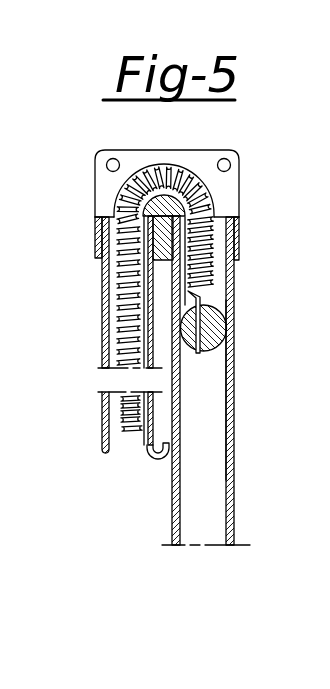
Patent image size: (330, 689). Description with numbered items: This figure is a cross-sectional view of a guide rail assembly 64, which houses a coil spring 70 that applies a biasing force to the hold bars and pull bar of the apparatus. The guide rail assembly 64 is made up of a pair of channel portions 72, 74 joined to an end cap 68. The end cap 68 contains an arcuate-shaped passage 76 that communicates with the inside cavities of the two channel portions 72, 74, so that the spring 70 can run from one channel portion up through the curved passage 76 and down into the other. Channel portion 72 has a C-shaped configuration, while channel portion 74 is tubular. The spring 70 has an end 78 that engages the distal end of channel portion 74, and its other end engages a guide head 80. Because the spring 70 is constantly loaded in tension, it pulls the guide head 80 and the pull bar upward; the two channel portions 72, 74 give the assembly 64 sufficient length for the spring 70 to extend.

The guide rail assembly 64 is at (235, 470).
The end cap 68 is at (240, 235).
The coil spring 70 is at (120, 272).
The channel portion 72 is at (235, 398).
The channel portion 74 is at (102, 340).
The arcuate-shaped passage 76 is at (213, 207).
The spring end 78 is at (153, 455).
The guide head 80 is at (220, 328).